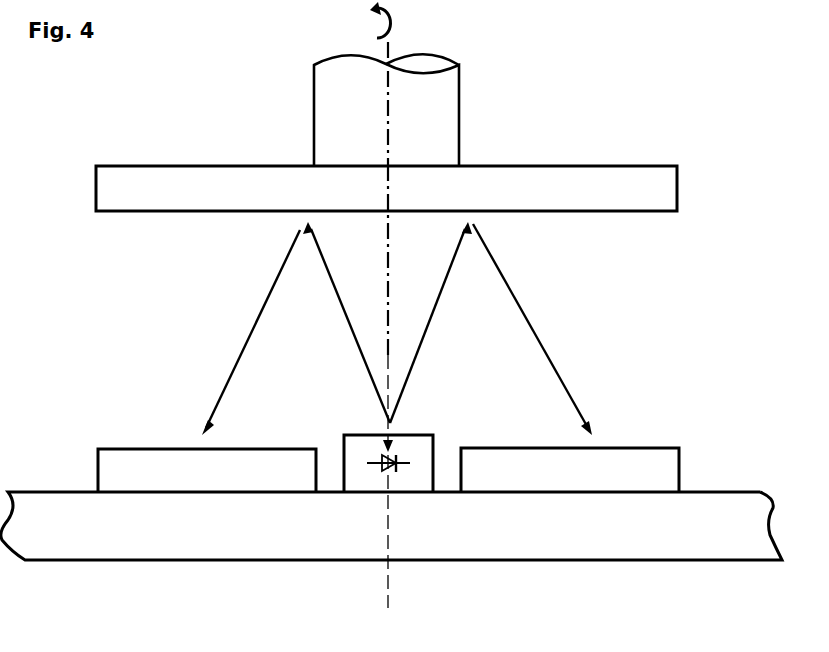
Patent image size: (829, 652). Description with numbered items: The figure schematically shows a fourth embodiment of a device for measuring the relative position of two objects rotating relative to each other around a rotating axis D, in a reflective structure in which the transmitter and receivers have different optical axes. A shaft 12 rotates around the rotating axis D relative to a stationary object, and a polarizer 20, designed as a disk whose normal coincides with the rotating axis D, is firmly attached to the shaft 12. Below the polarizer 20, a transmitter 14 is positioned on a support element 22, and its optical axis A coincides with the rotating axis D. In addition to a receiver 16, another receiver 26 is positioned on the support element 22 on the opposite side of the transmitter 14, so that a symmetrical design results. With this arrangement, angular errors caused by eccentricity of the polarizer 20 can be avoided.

The shaft 12 is at (437, 100).
The polarizer 20 is at (664, 183).
The receiver 26 is at (128, 467).
The receiver 16 is at (642, 470).
The transmitter 14 is at (375, 485).
The support element 22 is at (154, 538).
The rotating axis D is at (385, 110).
The optical axis A is at (395, 593).